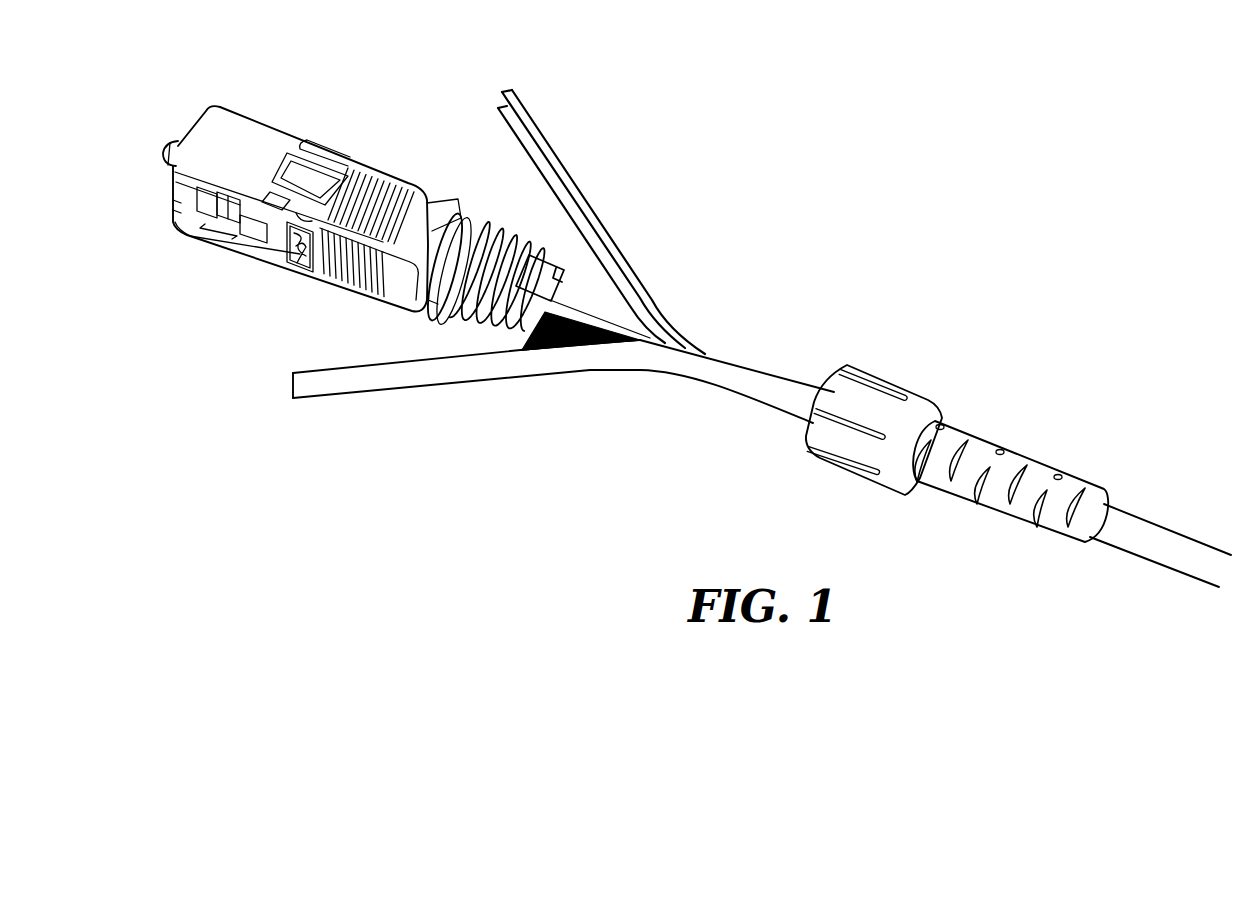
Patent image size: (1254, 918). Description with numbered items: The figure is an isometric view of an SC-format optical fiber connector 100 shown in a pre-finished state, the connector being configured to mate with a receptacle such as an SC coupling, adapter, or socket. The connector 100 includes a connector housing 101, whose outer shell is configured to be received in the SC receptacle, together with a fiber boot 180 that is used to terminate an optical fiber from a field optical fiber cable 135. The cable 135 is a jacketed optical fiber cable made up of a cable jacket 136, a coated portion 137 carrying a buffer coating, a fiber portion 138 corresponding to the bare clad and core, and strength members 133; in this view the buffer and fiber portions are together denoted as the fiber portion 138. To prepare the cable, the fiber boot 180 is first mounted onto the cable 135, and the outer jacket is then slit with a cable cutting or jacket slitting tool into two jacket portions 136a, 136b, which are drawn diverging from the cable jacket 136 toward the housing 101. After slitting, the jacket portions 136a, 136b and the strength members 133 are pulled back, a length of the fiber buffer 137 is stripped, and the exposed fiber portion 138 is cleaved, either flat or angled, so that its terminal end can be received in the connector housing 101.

The optical fiber connector 100 is at (925, 182).
The connector housing 101 is at (257, 140).
The strength members 133 is at (577, 348).
The optical fiber cable 135 is at (1156, 521).
The cable jacket 136 is at (720, 350).
The jacket portion 136a is at (523, 95).
The jacket portion 136b is at (307, 388).
The coated portion 137 is at (580, 313).
The fiber portion 138 is at (165, 147).
The fiber boot 180 is at (967, 388).